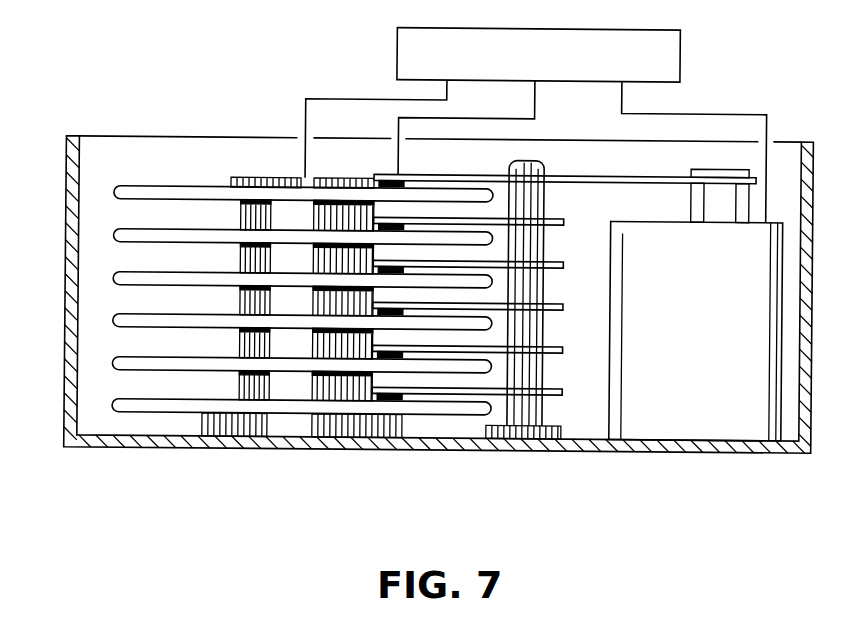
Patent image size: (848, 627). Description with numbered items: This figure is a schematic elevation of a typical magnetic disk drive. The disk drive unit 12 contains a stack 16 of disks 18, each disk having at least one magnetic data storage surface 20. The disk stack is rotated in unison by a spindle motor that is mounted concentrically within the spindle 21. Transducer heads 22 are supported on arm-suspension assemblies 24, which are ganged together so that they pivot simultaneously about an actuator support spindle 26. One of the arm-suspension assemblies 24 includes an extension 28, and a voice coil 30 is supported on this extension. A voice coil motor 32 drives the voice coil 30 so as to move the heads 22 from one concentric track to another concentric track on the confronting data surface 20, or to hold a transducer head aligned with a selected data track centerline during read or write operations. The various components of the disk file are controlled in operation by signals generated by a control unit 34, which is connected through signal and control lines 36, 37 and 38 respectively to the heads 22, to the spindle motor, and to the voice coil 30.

The disk drive unit 12 is at (259, 103).
The stack 16 is at (180, 171).
The disks 18 is at (113, 322).
The magnetic data storage surface 20 is at (131, 189).
The spindle 21 is at (300, 388).
The transducer heads 22 is at (383, 183).
The arm-suspension assemblies 24 is at (557, 219).
The actuator support spindle 26 is at (519, 414).
The extension 28 is at (606, 175).
The voice coil 30 is at (748, 203).
The voice coil motor 32 is at (690, 412).
The control unit 34 is at (679, 52).
The signal and control line 36 is at (509, 117).
The signal and control line 37 is at (350, 99).
The signal and control line 38 is at (668, 112).